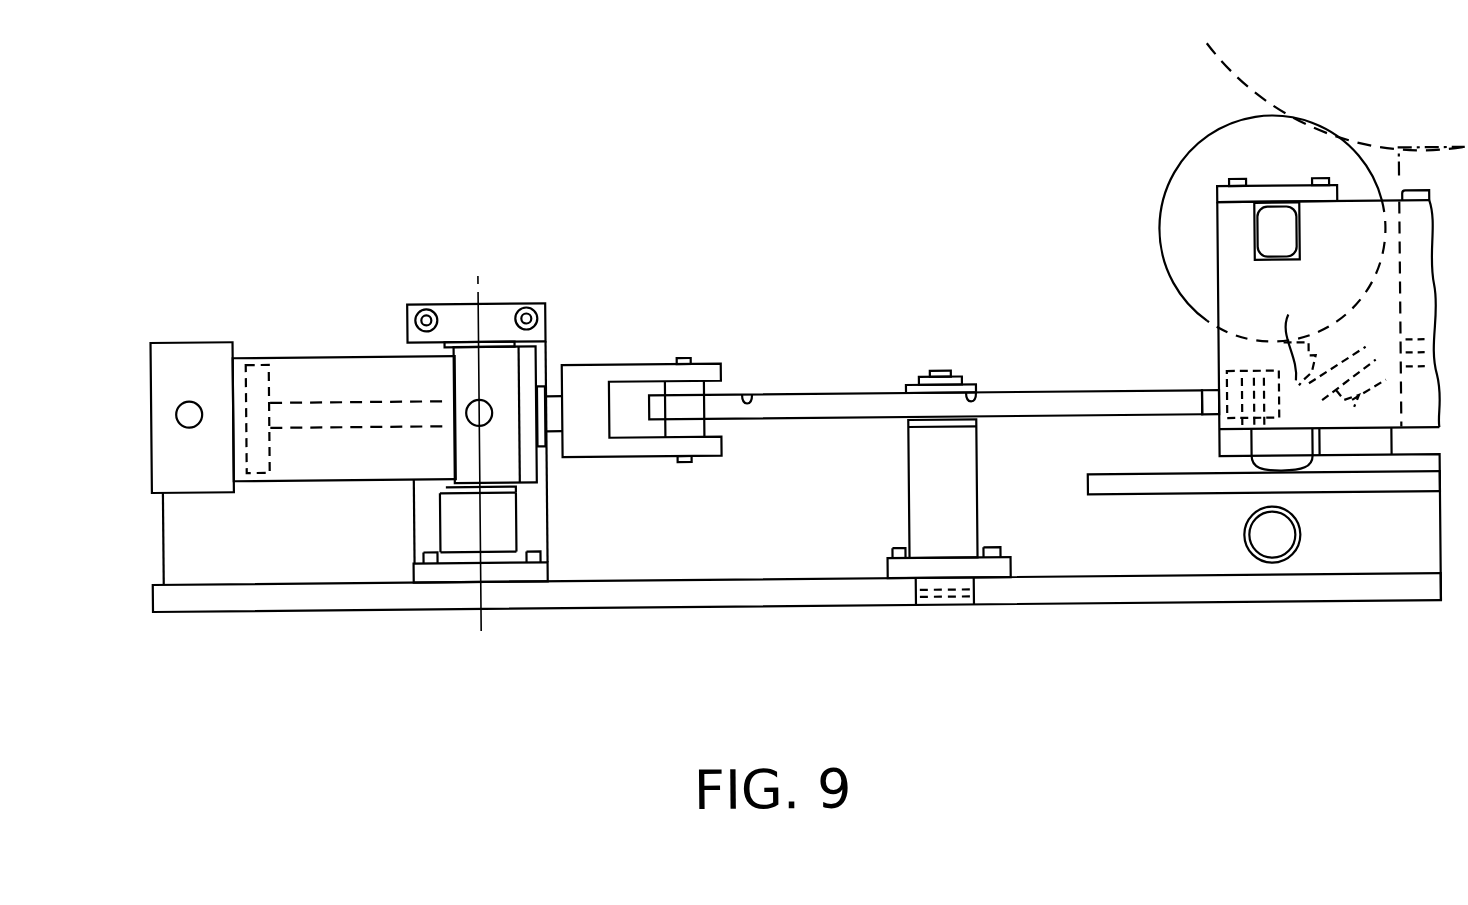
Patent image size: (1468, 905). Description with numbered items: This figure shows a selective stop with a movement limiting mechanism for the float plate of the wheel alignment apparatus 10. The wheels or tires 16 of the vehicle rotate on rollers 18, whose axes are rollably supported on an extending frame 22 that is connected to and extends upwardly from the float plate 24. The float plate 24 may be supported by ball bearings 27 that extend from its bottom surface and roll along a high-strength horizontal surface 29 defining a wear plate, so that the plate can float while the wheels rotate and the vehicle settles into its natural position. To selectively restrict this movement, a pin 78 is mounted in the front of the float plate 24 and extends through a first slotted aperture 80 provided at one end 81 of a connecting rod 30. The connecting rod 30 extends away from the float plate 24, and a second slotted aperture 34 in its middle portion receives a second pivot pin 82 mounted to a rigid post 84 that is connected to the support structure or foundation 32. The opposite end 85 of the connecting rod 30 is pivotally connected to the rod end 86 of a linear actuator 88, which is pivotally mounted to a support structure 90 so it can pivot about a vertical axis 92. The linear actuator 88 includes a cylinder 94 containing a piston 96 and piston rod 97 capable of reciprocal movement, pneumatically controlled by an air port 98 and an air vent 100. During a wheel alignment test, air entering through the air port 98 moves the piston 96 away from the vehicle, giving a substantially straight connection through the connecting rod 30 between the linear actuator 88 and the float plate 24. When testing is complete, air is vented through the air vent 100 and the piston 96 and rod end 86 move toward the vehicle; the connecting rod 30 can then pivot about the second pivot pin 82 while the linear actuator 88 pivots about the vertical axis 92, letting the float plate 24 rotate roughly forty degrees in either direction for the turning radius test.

The apparatus 10 is at (990, 264).
The wheels/tires 16 is at (1219, 60).
The rollers 18 is at (1200, 149).
The extending frame 22 is at (1220, 337).
The float plate 24 is at (1220, 440).
The ball bearings 27 is at (1297, 475).
The horizontal surface 29 is at (1105, 477).
The connecting rod 30 is at (816, 394).
The support structure or foundation 32 is at (1123, 579).
The second slotted aperture 34 is at (748, 394).
The pin 78 is at (1258, 372).
The first slotted aperture 80 is at (1210, 412).
The one end 81 is at (1299, 328).
The second pivot pin 82 is at (927, 373).
The rigid post 84 is at (978, 512).
The opposite end 85 is at (650, 410).
The rod end 86 is at (707, 360).
The linear actuator 88 is at (548, 356).
The support structure 90 is at (566, 582).
The vertical axis 92 is at (480, 297).
The cylinder 94 is at (273, 353).
The piston 96 is at (265, 470).
The piston rod 97 is at (330, 398).
The air port 98 is at (490, 421).
The air vent 100 is at (196, 405).